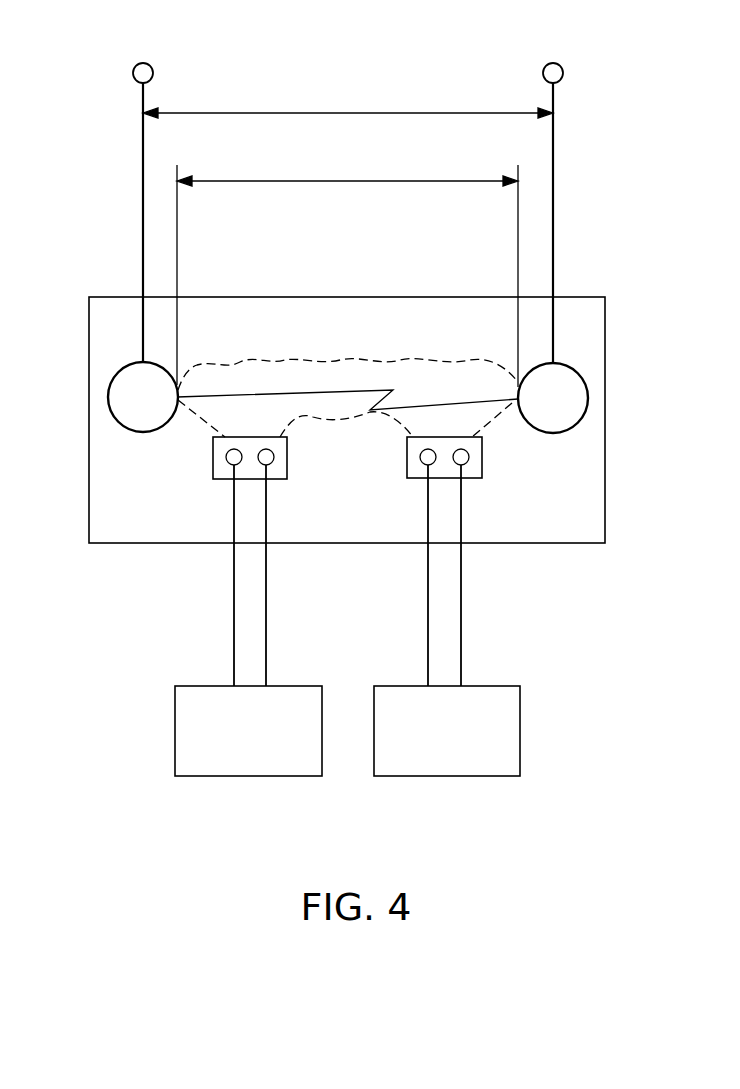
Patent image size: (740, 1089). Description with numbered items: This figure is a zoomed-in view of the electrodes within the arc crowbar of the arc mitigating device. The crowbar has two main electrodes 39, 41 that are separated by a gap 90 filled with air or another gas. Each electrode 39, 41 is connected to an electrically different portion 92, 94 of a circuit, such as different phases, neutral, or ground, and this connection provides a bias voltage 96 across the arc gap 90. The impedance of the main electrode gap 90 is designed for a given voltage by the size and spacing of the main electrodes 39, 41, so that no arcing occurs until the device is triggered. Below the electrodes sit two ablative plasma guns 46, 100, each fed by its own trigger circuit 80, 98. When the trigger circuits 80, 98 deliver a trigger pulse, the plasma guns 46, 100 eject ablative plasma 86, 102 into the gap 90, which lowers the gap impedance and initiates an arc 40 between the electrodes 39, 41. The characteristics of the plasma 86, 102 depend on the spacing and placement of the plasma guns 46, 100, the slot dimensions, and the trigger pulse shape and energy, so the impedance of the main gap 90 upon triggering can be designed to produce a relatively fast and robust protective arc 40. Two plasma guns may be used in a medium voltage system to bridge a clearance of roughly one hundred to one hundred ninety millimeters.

The main electrode 39 is at (116, 398).
The main electrode 41 is at (580, 398).
The arc 40 is at (343, 392).
The ablative plasma gun 46 is at (278, 480).
The trigger circuit 80 is at (201, 686).
The ablative plasma 86 is at (205, 424).
The gap 90 is at (348, 181).
The electrically different portion of a circuit 92 is at (143, 73).
The electrically different portion of a circuit 94 is at (553, 73).
The bias voltage 96 is at (340, 112).
The trigger circuit 98 is at (492, 686).
The ablative plasma gun 100 is at (416, 480).
The ablative plasma 102 is at (500, 417).